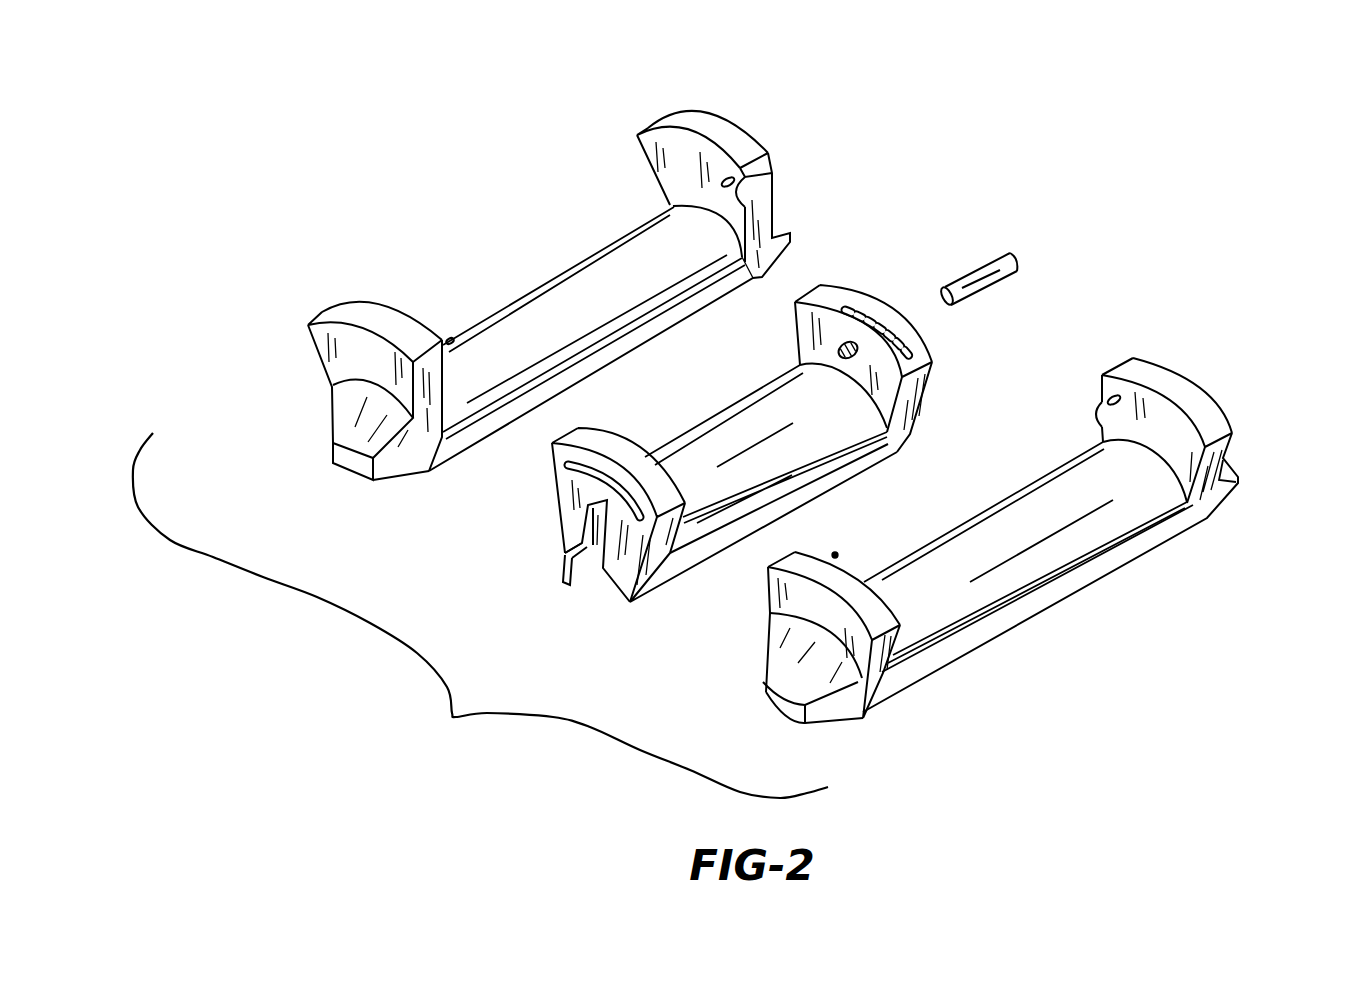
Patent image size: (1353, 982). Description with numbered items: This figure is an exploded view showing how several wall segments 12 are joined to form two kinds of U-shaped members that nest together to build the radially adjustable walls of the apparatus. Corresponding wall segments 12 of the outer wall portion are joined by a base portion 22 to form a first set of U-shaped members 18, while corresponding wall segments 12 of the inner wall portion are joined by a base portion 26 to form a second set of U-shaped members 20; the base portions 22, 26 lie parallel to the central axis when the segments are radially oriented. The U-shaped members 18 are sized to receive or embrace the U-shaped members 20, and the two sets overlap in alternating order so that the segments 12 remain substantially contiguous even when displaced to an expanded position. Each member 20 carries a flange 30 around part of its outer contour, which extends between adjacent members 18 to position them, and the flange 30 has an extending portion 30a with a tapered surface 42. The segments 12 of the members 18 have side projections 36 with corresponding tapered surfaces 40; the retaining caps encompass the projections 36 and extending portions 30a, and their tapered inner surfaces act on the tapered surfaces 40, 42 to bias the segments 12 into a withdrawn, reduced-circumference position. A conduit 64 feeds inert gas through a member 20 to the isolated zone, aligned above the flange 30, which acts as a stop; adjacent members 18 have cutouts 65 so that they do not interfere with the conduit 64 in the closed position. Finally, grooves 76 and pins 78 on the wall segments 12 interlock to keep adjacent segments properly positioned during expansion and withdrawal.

The wall segment 12 is at (680, 172).
The first set of U-shaped members 18 is at (733, 114).
The second set of U-shaped members 20 is at (882, 293).
The base portion 22 is at (548, 315).
The base portion 26 is at (742, 432).
The flange 30 is at (597, 588).
The extending portion 30a is at (570, 595).
The projection 36 is at (788, 240).
The tapered surface 40 is at (348, 418).
The tapered surface 42 is at (563, 547).
The conduit 64 is at (1003, 257).
The cutout 65 is at (748, 198).
The groove 76 is at (580, 475).
The pin 78 is at (720, 184).